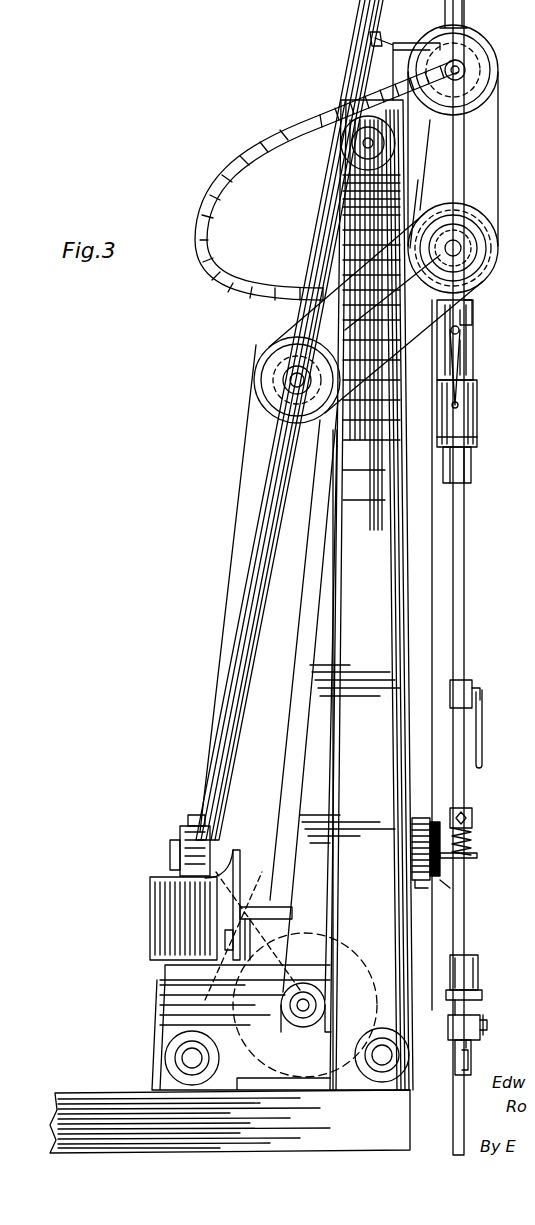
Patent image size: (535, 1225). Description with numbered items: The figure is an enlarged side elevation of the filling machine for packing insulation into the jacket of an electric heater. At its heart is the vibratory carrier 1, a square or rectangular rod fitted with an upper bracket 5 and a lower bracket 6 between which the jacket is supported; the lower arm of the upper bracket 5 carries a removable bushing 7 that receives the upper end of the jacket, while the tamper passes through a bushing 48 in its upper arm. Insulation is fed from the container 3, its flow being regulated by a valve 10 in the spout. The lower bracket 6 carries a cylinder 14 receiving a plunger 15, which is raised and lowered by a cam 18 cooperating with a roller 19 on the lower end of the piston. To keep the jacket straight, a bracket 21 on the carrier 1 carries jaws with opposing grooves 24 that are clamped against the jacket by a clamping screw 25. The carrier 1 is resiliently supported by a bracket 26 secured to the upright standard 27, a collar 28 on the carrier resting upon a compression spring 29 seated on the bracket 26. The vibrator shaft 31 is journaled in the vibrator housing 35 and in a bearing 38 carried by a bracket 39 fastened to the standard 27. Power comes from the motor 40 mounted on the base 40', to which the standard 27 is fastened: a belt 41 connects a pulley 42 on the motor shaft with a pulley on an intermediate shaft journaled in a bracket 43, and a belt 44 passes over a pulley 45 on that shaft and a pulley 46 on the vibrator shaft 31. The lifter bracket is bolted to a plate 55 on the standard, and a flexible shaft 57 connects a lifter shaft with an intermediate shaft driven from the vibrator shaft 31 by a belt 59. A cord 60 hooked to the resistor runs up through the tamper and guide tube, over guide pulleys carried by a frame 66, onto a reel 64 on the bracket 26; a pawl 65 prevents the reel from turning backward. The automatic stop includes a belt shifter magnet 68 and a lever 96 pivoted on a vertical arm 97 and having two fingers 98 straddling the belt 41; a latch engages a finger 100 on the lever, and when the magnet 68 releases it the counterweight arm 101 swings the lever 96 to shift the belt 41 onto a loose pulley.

The vibratory carrier 1 is at (460, 623).
The container 3 is at (470, 325).
The upper bracket 5 is at (477, 430).
The lower bracket 6 is at (480, 1020).
The removable bushing 7 is at (471, 480).
The valve 10 is at (470, 383).
The cylinder 14 is at (478, 972).
The plunger 15 is at (455, 1010).
The cam 18 is at (470, 1060).
The roller 19 is at (470, 1043).
The bracket 21 is at (450, 700).
The grooves 24 is at (462, 12).
The clamping screw 25 is at (483, 703).
The bracket 26 is at (475, 858).
The standard 27 is at (355, 568).
The collar 28 is at (473, 813).
The compression spring 29 is at (473, 840).
The vibrator shaft 31 is at (480, 240).
The vibrator housing 35 is at (437, 293).
The bearing 38 is at (490, 247).
The bracket 39 is at (420, 198).
The motor 40 is at (305, 999).
The base 40' is at (287, 1073).
The belt 41 is at (334, 790).
The pulley 42 is at (312, 1027).
The bracket 43 is at (258, 398).
The belt 44 is at (428, 330).
The pulley 45 is at (258, 380).
The pulley 46 is at (490, 268).
The bushing 48 is at (473, 352).
The plate 55 is at (432, 206).
The flexible shaft 57 is at (237, 250).
The belt 59 is at (492, 140).
The cord 60 is at (432, 580).
The reel 64 is at (422, 820).
The pawl 65 is at (420, 888).
The frame 66 is at (273, 520).
The belt shifter magnet 68 is at (185, 853).
The lever 96 is at (219, 879).
The vertical arm 97 is at (218, 938).
The fingers 98 is at (262, 905).
The finger 100 is at (185, 864).
The counterweight arm 101 is at (248, 860).